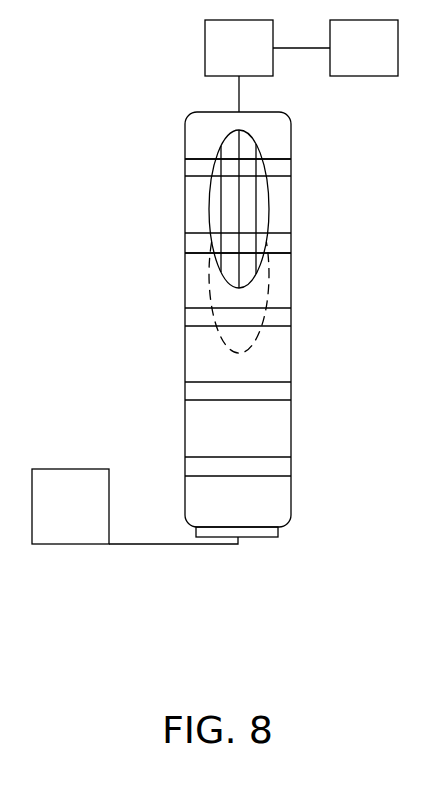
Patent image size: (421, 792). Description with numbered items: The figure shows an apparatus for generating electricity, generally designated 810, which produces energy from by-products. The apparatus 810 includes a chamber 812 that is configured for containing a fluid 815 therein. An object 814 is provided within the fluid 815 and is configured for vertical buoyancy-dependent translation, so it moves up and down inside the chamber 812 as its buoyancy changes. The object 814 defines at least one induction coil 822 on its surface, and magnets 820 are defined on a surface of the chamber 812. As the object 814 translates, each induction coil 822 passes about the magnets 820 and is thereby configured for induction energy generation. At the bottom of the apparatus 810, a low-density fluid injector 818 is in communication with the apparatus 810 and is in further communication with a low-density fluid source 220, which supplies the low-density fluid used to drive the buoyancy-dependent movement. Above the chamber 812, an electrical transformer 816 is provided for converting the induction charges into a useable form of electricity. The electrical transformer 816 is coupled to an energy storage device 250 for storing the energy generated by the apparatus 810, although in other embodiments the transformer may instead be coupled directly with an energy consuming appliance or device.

The apparatus for generating electricity 810 is at (322, 441).
The chamber 812 is at (291, 362).
The object 814 is at (264, 192).
The fluid 815 is at (268, 426).
The electrical transformer 816 is at (258, 59).
The low-density fluid injector 818 is at (270, 530).
The magnets 820 is at (198, 168).
The induction coil 822 is at (220, 202).
The energy storage device 250 is at (383, 59).
The low-density fluid source 220 is at (92, 518).